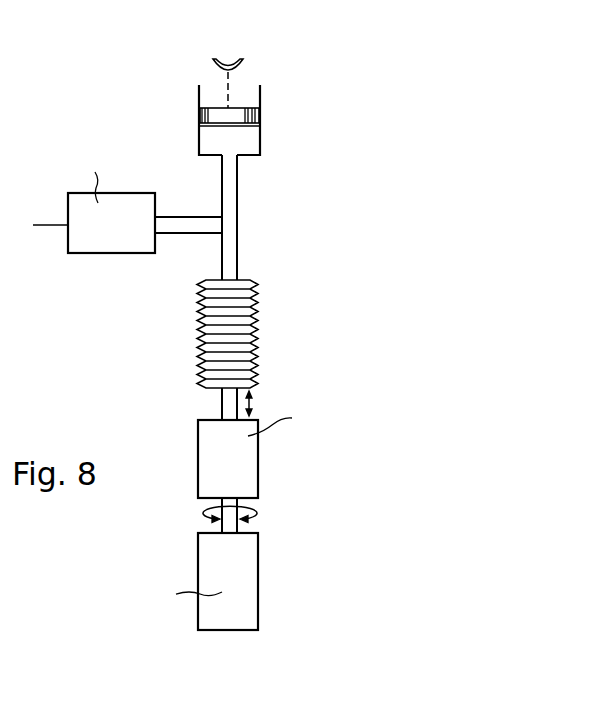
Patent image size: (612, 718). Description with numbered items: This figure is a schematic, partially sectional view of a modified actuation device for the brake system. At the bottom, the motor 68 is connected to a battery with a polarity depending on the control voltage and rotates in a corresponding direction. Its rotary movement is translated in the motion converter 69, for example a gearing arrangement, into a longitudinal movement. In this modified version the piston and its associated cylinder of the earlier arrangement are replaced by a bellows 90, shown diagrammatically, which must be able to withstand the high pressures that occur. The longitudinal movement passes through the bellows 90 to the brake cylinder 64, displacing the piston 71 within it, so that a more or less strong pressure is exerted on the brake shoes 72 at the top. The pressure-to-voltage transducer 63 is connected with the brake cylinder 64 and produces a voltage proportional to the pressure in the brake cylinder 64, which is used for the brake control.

The brake shoes 72 is at (229, 56).
The piston 71 is at (261, 117).
The brake cylinder 64 is at (261, 145).
The pressure-to-voltage transducer 63 is at (124, 243).
The bellows 90 is at (245, 303).
The motion converter 69 is at (244, 456).
The motor 68 is at (245, 566).